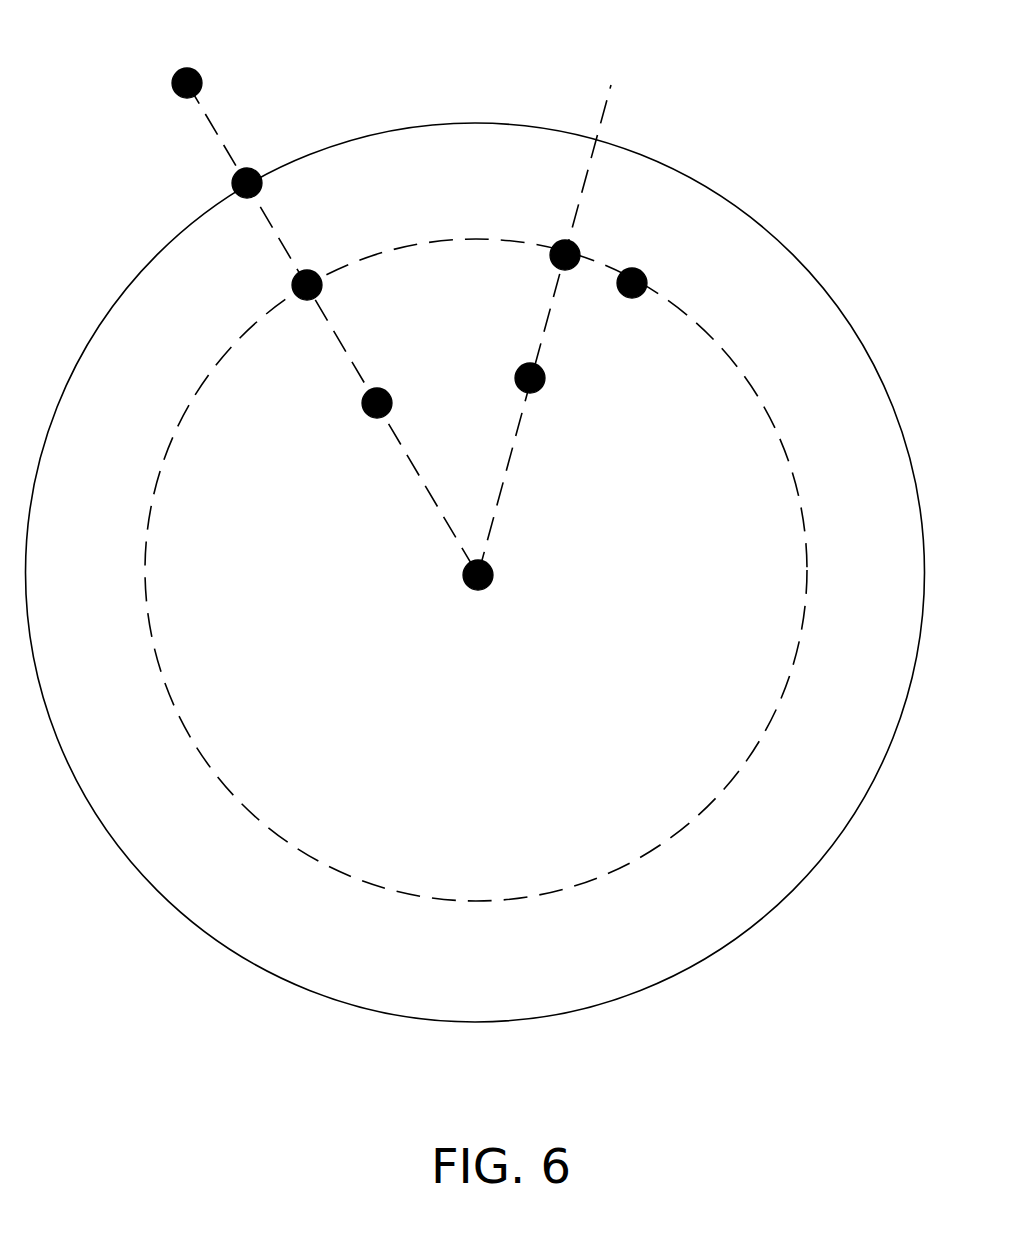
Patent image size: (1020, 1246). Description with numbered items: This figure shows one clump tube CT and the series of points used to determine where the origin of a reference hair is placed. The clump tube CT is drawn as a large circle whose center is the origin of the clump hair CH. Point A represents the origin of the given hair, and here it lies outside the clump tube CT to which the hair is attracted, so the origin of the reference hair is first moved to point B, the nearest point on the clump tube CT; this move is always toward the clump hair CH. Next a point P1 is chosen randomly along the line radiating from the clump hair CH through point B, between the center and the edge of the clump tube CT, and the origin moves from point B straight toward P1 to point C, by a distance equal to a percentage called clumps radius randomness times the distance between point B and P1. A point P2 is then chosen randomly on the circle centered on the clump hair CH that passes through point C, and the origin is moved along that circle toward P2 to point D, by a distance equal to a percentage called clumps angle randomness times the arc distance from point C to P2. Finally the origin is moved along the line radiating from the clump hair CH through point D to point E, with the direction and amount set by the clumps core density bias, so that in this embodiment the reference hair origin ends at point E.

The point A is at (196, 70).
The point B is at (257, 169).
The point C is at (318, 271).
The point D is at (575, 241).
The point E is at (540, 363).
The point P1 is at (388, 390).
The point P2 is at (643, 269).
The clump hair CH is at (488, 561).
The clump tube CT is at (769, 237).